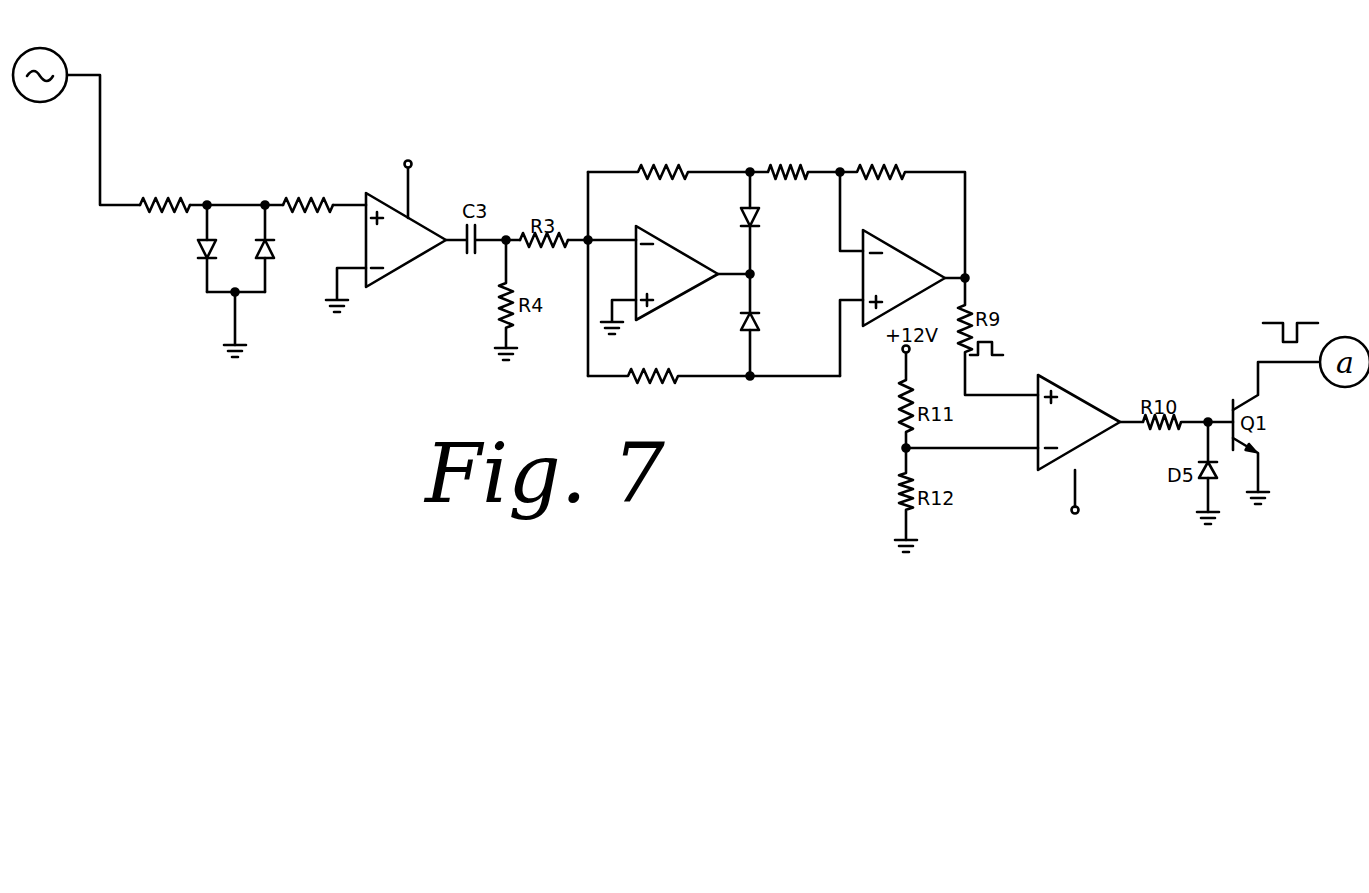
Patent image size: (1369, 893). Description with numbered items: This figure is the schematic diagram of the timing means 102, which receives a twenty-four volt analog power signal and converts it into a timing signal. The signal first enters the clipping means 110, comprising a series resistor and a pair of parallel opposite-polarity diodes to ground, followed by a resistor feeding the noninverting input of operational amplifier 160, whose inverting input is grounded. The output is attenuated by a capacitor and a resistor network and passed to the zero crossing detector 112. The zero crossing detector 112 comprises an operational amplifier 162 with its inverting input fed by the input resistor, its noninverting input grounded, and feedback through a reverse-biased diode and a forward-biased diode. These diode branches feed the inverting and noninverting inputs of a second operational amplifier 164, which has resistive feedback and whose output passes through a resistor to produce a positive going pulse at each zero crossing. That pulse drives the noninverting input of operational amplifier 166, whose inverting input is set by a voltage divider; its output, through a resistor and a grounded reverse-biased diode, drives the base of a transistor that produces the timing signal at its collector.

The timing means 102 is at (914, 199).
The clipping means 110 is at (312, 308).
The zero crossing detector 112 is at (714, 241).
The operational amplifier 160 is at (402, 253).
The operational amplifier 162 is at (671, 280).
The second operational amplifier 164 is at (900, 268).
The operational amplifier 166 is at (1080, 400).